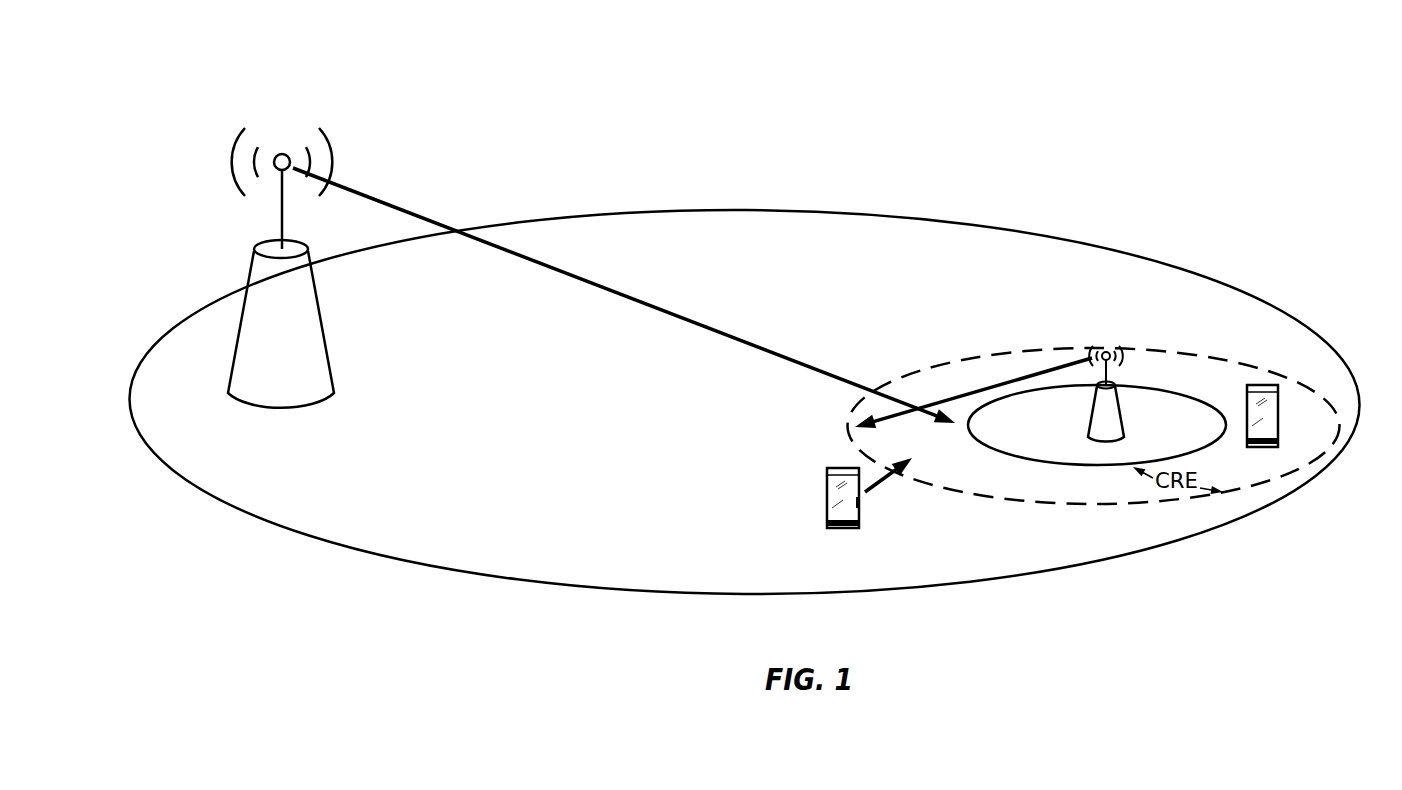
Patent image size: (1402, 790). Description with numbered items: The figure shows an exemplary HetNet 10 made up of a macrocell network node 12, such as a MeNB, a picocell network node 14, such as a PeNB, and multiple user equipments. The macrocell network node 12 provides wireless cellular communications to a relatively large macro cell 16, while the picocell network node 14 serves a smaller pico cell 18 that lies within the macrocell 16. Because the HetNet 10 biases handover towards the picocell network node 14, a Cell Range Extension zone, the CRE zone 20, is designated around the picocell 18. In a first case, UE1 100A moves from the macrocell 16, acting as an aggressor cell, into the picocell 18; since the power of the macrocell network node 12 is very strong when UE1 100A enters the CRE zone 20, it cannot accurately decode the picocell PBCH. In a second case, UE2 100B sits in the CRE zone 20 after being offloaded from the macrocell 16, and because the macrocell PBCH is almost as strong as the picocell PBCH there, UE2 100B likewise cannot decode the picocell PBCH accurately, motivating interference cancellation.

The HetNet 10 is at (1114, 86).
The macrocell network node 12 is at (328, 350).
The picocell network node 14 is at (1123, 430).
The macro cell 16 is at (1082, 567).
The pico cell 18 is at (1158, 389).
The CRE zone 20 is at (1073, 503).
The UE1 100A is at (859, 507).
The UE2 100B is at (1277, 398).